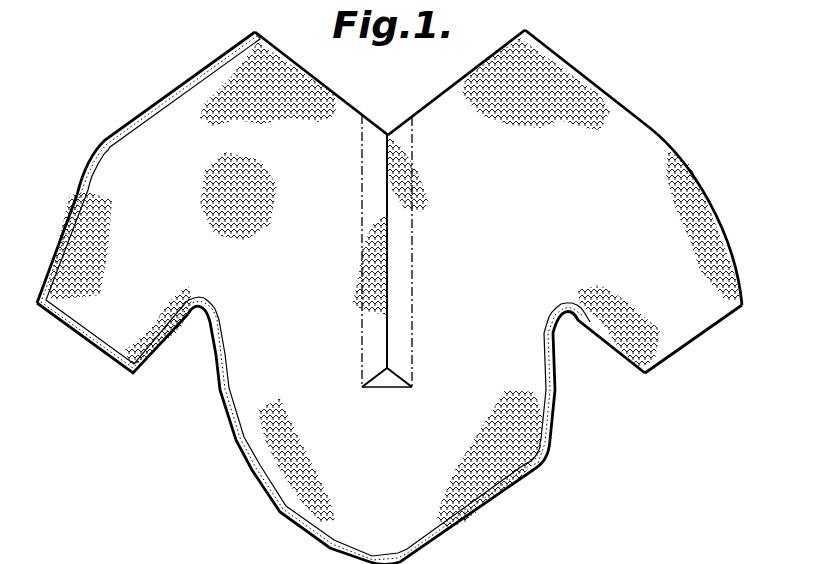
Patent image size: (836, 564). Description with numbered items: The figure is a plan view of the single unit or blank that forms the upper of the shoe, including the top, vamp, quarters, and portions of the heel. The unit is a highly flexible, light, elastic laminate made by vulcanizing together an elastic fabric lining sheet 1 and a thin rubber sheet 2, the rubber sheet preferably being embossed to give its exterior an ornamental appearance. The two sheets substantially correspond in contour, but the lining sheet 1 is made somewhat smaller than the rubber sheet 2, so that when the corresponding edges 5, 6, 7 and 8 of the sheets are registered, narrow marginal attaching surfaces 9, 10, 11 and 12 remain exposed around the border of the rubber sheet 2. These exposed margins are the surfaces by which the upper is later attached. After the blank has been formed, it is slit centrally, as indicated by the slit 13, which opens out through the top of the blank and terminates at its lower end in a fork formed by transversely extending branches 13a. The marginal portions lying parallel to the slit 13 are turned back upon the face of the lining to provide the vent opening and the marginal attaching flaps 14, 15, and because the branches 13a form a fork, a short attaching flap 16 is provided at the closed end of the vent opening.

The lining sheet 1 is at (203, 120).
The rubber sheet 2 is at (95, 158).
The edge of the sheets 5 is at (318, 77).
The edge of the sheets 6 is at (457, 78).
The edge of the sheets 7 is at (633, 110).
The edge of the sheets 8 is at (694, 338).
The marginal attaching surface 9 is at (67, 215).
The marginal attaching surface 10 is at (93, 350).
The marginal attaching surface 11 is at (247, 470).
The marginal attaching surface 12 is at (537, 465).
The slit 13 is at (385, 185).
The transversely extending branches 13a is at (398, 373).
The marginal attaching flap 14 is at (372, 230).
The marginal attaching flap 15 is at (400, 240).
The short attaching flap 16 is at (382, 382).